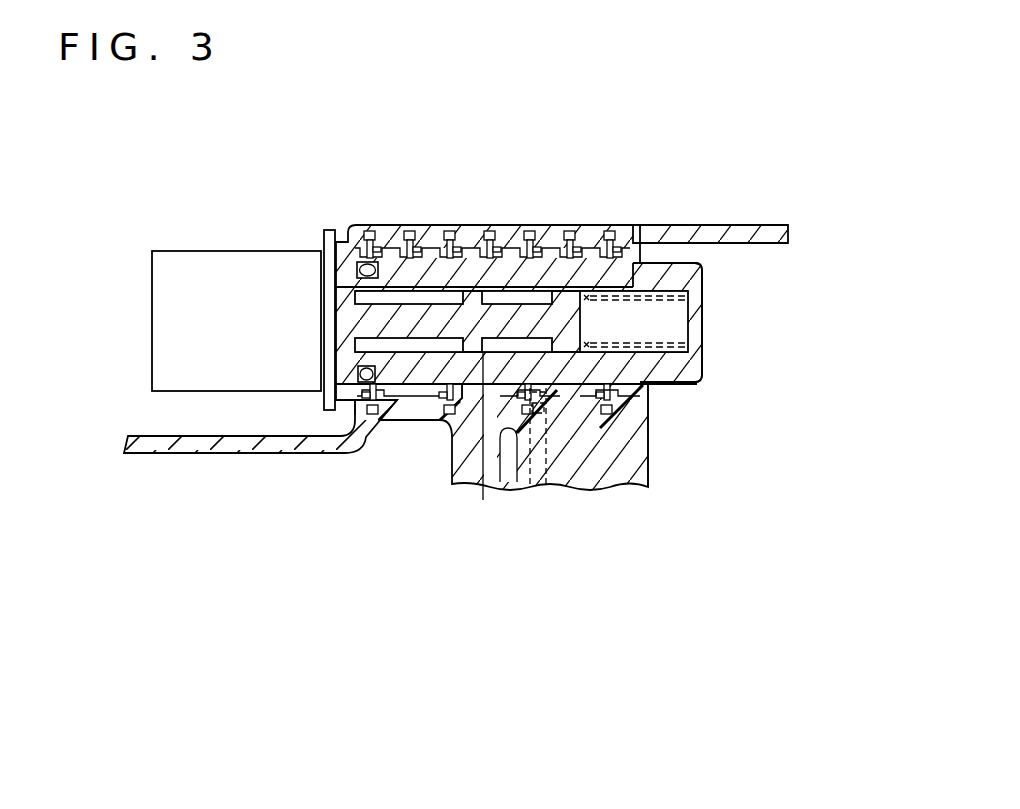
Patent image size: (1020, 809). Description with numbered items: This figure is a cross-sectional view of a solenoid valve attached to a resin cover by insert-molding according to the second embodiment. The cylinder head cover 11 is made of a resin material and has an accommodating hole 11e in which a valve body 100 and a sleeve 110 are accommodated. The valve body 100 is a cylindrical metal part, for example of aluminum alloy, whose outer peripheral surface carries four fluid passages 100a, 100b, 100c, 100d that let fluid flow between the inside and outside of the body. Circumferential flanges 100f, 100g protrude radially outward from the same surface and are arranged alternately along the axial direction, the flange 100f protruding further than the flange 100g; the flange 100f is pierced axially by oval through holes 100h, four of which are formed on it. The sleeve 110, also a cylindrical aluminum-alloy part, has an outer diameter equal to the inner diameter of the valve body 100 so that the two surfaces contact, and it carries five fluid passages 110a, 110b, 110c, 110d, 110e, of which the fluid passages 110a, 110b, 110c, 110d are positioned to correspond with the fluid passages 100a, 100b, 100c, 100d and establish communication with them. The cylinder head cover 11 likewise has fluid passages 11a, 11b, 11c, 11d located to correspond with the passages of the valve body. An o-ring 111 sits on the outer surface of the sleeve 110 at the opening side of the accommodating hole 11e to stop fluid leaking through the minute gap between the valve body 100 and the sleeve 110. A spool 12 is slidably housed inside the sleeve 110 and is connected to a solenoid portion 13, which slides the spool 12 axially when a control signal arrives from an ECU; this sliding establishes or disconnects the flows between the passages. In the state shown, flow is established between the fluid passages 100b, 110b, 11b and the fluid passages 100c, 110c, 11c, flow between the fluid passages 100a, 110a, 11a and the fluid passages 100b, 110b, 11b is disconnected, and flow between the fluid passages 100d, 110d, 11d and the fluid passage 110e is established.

The cylinder head cover 11 is at (630, 257).
The fluid passage 11a is at (428, 400).
The fluid passage 11b is at (500, 430).
The fluid passage 11c is at (545, 490).
The fluid passage 11d is at (587, 427).
The accommodating hole 11e is at (660, 266).
The spool 12 is at (570, 320).
The solenoid portion 13 is at (235, 231).
The valve body 100 is at (516, 184).
The fluid passage 100a is at (407, 370).
The fluid passage 100b is at (496, 385).
The fluid passage 100c is at (548, 505).
The fluid passage 100d is at (579, 365).
The flange 100f is at (413, 228).
The flange 100g is at (473, 228).
The through hole 100h is at (546, 228).
The sleeve 110 is at (592, 260).
The fluid passage 110a is at (398, 474).
The fluid passage 110b is at (513, 522).
The fluid passage 110c is at (615, 566).
The fluid passage 110d is at (690, 522).
The fluid passage 110e is at (674, 370).
The o-ring 111 is at (344, 228).